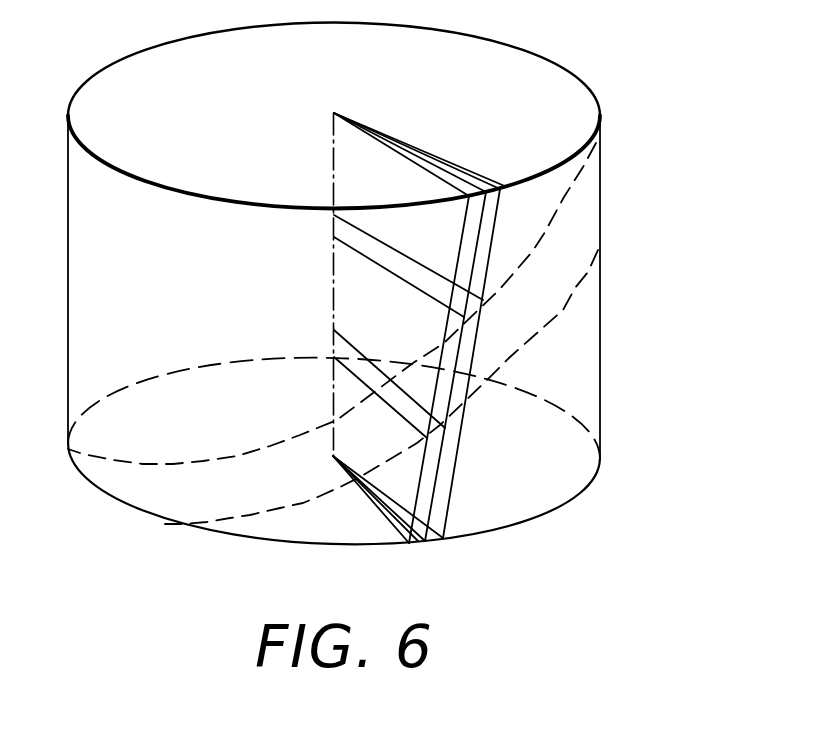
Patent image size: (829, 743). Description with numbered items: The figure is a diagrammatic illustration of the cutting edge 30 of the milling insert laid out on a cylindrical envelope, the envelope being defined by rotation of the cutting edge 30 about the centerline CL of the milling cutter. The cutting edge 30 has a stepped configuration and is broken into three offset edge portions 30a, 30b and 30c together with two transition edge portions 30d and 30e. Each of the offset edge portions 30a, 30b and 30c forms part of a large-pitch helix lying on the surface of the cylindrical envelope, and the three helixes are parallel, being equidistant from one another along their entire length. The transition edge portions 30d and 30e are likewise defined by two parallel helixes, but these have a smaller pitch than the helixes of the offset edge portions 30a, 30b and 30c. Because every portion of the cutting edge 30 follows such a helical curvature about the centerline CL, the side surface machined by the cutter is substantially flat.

The centerline CL is at (314, 267).
The cutting edge 30 is at (407, 546).
The offset edge portion 30a is at (500, 216).
The offset edge portion 30b is at (460, 347).
The offset edge portion 30c is at (450, 490).
The transition edge portion 30d is at (483, 300).
The transition edge portion 30e is at (444, 434).